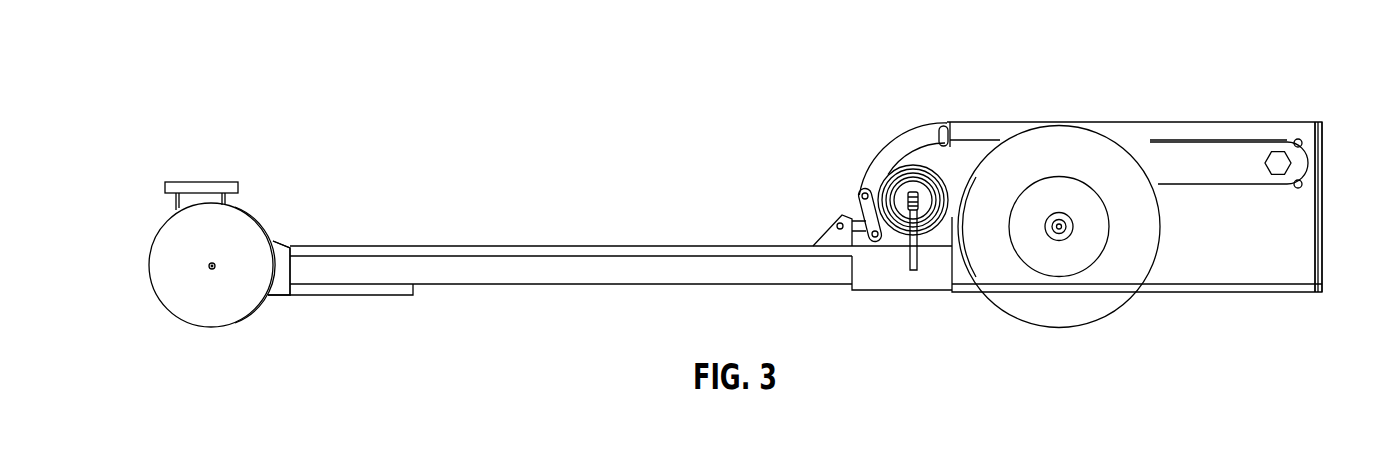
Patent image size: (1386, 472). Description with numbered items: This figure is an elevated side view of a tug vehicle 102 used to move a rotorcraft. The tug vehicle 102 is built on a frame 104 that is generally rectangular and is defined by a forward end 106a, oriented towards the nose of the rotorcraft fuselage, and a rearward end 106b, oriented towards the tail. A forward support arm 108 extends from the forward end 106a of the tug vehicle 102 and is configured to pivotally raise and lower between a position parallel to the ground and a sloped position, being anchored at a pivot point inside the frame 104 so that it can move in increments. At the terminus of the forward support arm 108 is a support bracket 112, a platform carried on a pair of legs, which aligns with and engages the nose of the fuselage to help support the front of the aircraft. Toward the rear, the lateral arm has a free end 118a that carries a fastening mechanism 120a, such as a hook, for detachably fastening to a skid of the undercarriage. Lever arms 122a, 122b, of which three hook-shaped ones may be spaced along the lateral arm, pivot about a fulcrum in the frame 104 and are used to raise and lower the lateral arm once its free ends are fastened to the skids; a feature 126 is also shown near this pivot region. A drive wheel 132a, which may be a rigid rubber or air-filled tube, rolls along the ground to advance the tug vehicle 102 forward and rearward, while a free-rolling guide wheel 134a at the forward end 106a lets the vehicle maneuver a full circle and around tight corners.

The tug vehicle 102 is at (461, 66).
The frame 104 is at (1308, 111).
The forward end 106a is at (279, 212).
The rearward end 106b is at (1306, 310).
The forward support arm 108 is at (596, 244).
The support bracket 112 is at (200, 180).
The free end 118a is at (890, 177).
The fastening mechanism 120a is at (925, 265).
The lever arm 122a is at (1233, 148).
The lever arm 122b is at (907, 133).
The slot 126 is at (941, 127).
The drive wheel 132a is at (1075, 300).
The guide wheel 134a is at (200, 327).